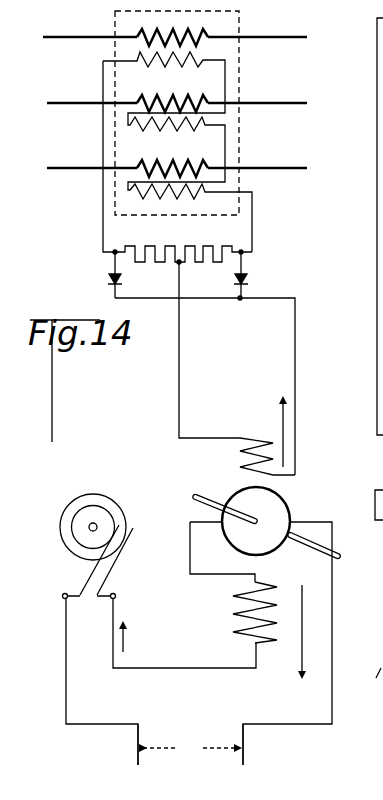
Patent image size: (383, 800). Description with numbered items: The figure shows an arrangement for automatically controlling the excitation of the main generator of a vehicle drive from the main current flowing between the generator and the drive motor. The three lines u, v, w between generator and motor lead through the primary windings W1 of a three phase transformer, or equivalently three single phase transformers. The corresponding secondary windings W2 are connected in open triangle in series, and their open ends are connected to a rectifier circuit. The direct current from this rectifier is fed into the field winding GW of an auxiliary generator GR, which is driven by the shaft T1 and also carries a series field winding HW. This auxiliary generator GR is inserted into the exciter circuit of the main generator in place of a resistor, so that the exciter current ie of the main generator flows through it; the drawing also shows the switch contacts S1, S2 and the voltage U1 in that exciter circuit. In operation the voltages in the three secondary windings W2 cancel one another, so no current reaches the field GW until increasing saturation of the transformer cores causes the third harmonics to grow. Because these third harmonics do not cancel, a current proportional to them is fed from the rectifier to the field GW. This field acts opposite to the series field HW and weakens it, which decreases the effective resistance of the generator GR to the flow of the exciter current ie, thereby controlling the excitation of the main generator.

The line u U is at (175, 28).
The line v V is at (177, 94).
The line w W is at (176, 159).
The primary windings W1 is at (178, 96).
The secondary windings W2 is at (177, 152).
The field winding GW is at (267, 446).
The series field winding HW is at (236, 612).
The auxiliary generator GR is at (268, 521).
The shaft T1 is at (205, 493).
The switch contact 1 S1 is at (60, 520).
The switch contact 2 S2 is at (75, 538).
The exciter current ie is at (130, 639).
The voltage U1 is at (190, 744).